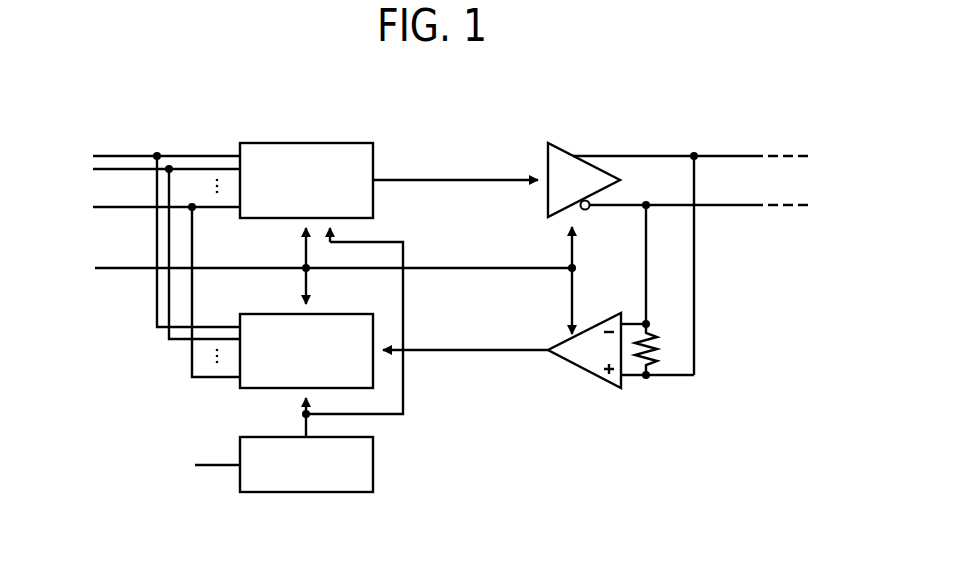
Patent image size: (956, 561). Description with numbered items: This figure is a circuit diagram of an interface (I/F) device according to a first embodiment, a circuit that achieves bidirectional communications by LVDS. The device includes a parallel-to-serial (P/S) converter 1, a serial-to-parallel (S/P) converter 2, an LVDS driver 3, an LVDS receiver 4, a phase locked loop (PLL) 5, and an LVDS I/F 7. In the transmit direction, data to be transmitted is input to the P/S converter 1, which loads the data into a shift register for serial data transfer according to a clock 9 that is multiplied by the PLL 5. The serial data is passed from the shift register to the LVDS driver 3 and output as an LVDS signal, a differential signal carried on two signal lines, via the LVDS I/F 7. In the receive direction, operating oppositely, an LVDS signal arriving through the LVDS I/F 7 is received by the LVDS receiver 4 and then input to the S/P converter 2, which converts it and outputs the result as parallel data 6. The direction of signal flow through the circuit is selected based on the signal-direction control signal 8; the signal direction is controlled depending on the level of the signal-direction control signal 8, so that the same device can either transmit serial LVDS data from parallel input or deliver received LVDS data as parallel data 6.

The parallel-to-serial (P/S) converter 1 is at (344, 142).
The serial-to-parallel (S/P) converter 2 is at (344, 314).
The LVDS driver 3 is at (560, 143).
The LVDS receiver 4 is at (572, 366).
The phase locked loop (PLL) 5 is at (344, 493).
The parallel data 6 is at (89, 155).
The LVDS I/F 7 is at (735, 156).
The signal-direction control signal 8 is at (326, 280).
The clock 9 is at (208, 464).